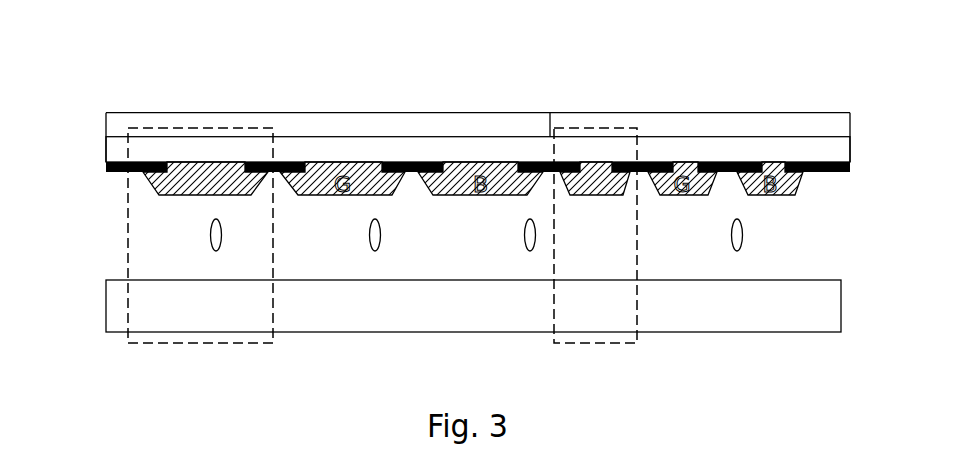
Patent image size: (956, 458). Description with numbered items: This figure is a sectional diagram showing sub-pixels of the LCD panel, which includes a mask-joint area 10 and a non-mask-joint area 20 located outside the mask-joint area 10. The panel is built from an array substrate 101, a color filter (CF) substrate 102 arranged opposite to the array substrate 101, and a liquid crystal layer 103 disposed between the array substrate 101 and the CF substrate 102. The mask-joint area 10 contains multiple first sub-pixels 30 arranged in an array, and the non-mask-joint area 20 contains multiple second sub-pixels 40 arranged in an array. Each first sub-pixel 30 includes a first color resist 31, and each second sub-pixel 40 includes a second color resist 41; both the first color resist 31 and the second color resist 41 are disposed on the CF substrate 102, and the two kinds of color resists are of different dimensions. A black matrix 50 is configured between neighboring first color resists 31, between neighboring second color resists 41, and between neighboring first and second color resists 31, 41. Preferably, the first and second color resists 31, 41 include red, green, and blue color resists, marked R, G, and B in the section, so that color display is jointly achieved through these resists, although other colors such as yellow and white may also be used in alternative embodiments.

The mask-joint area 10 is at (700, 127).
The non-mask-joint area 20 is at (328, 127).
The first sub-pixel 30 is at (595, 127).
The second sub-pixel 40 is at (192, 128).
The first color resist 31 is at (200, 175).
The second color resist 41 is at (595, 175).
The black matrix 50 is at (106, 167).
The array substrate 101 is at (815, 310).
The color filter (CF) substrate 102 is at (850, 148).
The liquid crystal layer 103 is at (742, 235).